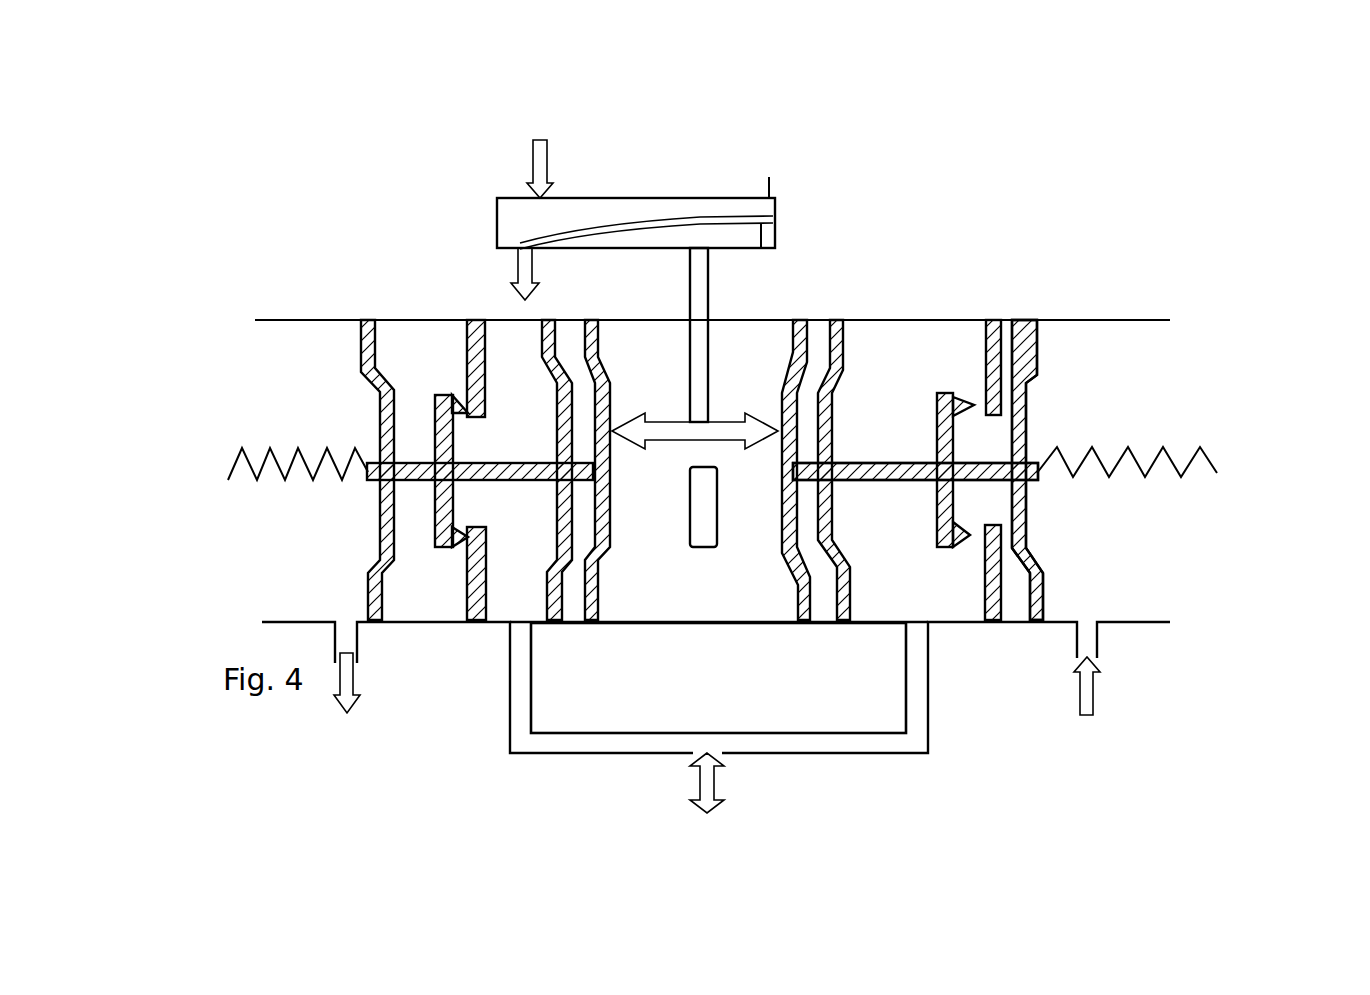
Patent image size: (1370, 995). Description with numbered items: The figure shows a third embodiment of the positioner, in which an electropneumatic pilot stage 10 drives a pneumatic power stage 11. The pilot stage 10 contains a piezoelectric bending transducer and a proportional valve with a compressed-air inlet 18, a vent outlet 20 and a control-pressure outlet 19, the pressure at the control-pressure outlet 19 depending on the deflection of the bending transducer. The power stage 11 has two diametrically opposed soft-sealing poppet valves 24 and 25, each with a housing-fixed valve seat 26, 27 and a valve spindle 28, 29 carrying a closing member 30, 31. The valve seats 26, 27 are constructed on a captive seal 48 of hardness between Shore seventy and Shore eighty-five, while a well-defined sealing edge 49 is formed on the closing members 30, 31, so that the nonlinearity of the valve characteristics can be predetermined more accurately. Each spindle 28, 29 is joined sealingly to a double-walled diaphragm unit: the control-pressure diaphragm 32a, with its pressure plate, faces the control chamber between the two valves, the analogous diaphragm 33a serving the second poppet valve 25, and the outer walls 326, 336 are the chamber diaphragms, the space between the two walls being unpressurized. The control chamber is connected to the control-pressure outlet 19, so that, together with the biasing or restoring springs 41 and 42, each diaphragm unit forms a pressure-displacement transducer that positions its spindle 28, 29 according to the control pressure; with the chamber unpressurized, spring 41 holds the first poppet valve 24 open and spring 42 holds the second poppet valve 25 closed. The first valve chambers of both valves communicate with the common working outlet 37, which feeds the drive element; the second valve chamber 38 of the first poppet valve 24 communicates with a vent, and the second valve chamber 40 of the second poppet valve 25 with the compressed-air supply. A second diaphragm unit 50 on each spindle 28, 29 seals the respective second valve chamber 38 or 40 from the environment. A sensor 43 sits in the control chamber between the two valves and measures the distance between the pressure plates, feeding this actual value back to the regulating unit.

The electropneumatic pilot stage 10 is at (685, 178).
The pneumatic power stage 11 is at (1150, 297).
The compressed-air inlet 18 is at (552, 153).
The control-pressure outlet 19 is at (710, 283).
The vent outlet 20 is at (531, 268).
The first poppet valve 24 is at (981, 368).
The second poppet valve 25 is at (426, 348).
The valve seat 26 is at (983, 542).
The valve seat 27 is at (460, 540).
The valve spindle 28 is at (1034, 481).
The valve spindle 29 is at (405, 488).
The closing member 30 is at (953, 543).
The closing member 31 is at (440, 528).
The control-pressure diaphragm 32a is at (797, 600).
The first outlet opening 33a is at (598, 602).
The second outlet channel wall 326 is at (838, 338).
The first outlet channel wall 336 is at (541, 357).
The working outlet 37 is at (700, 777).
The second valve chamber 38 is at (1012, 343).
The second valve chamber 40 is at (443, 350).
The biasing or restoring spring 41 is at (1212, 457).
The biasing or restoring spring 42 is at (268, 450).
The sensor 43 is at (722, 535).
The captive seal 48 is at (980, 400).
The sealing edge 49 is at (1040, 442).
The second diaphragm unit 50 is at (360, 348).